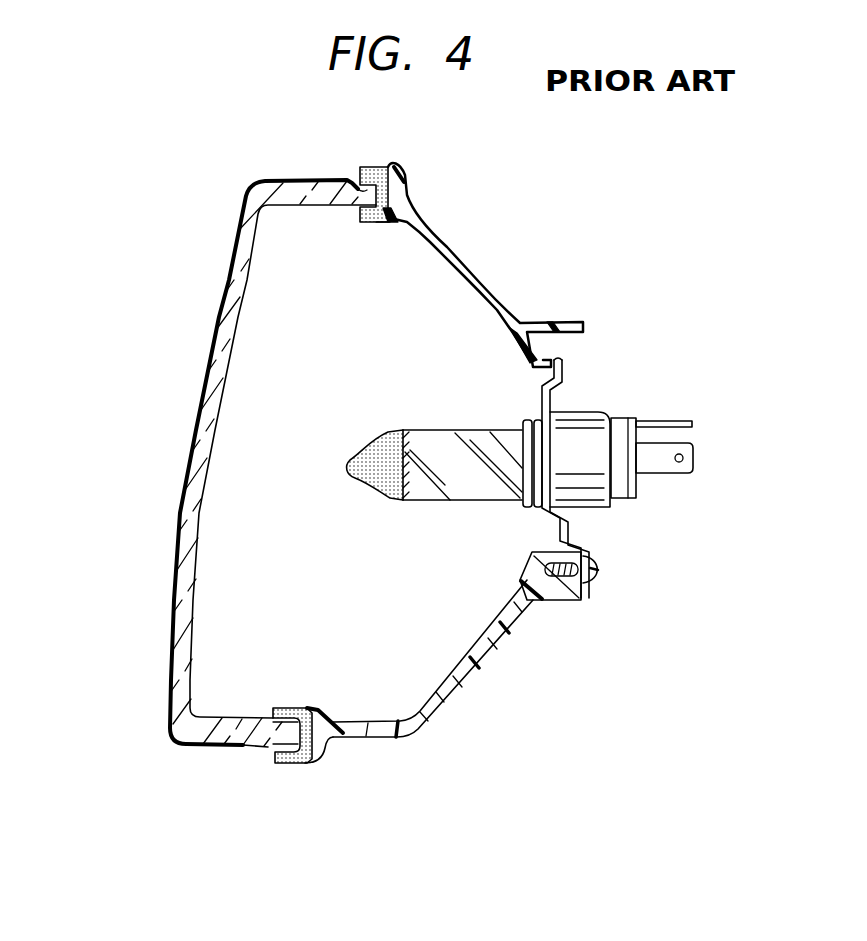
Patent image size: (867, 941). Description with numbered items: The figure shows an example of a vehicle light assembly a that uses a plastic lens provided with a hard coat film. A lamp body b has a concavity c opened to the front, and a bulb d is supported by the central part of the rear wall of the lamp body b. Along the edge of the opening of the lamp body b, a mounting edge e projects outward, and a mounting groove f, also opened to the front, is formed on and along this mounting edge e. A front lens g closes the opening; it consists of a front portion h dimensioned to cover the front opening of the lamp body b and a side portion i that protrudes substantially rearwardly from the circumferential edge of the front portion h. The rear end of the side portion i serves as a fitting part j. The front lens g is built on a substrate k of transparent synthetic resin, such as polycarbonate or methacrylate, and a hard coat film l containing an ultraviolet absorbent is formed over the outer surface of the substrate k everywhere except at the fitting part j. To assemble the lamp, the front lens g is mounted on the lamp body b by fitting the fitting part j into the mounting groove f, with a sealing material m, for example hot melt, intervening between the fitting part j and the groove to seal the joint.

The vehicle light assembly a is at (522, 243).
The lamp body b is at (498, 645).
The concavity c is at (452, 677).
The bulb d is at (418, 440).
The mounting edge e is at (393, 168).
The mounting groove f is at (355, 187).
The front lens g is at (224, 327).
The front portion h is at (214, 398).
The side portion i is at (228, 732).
The fitting part j is at (290, 732).
The substrate k is at (194, 525).
The hard coat film l is at (182, 520).
The sealing material m is at (381, 217).